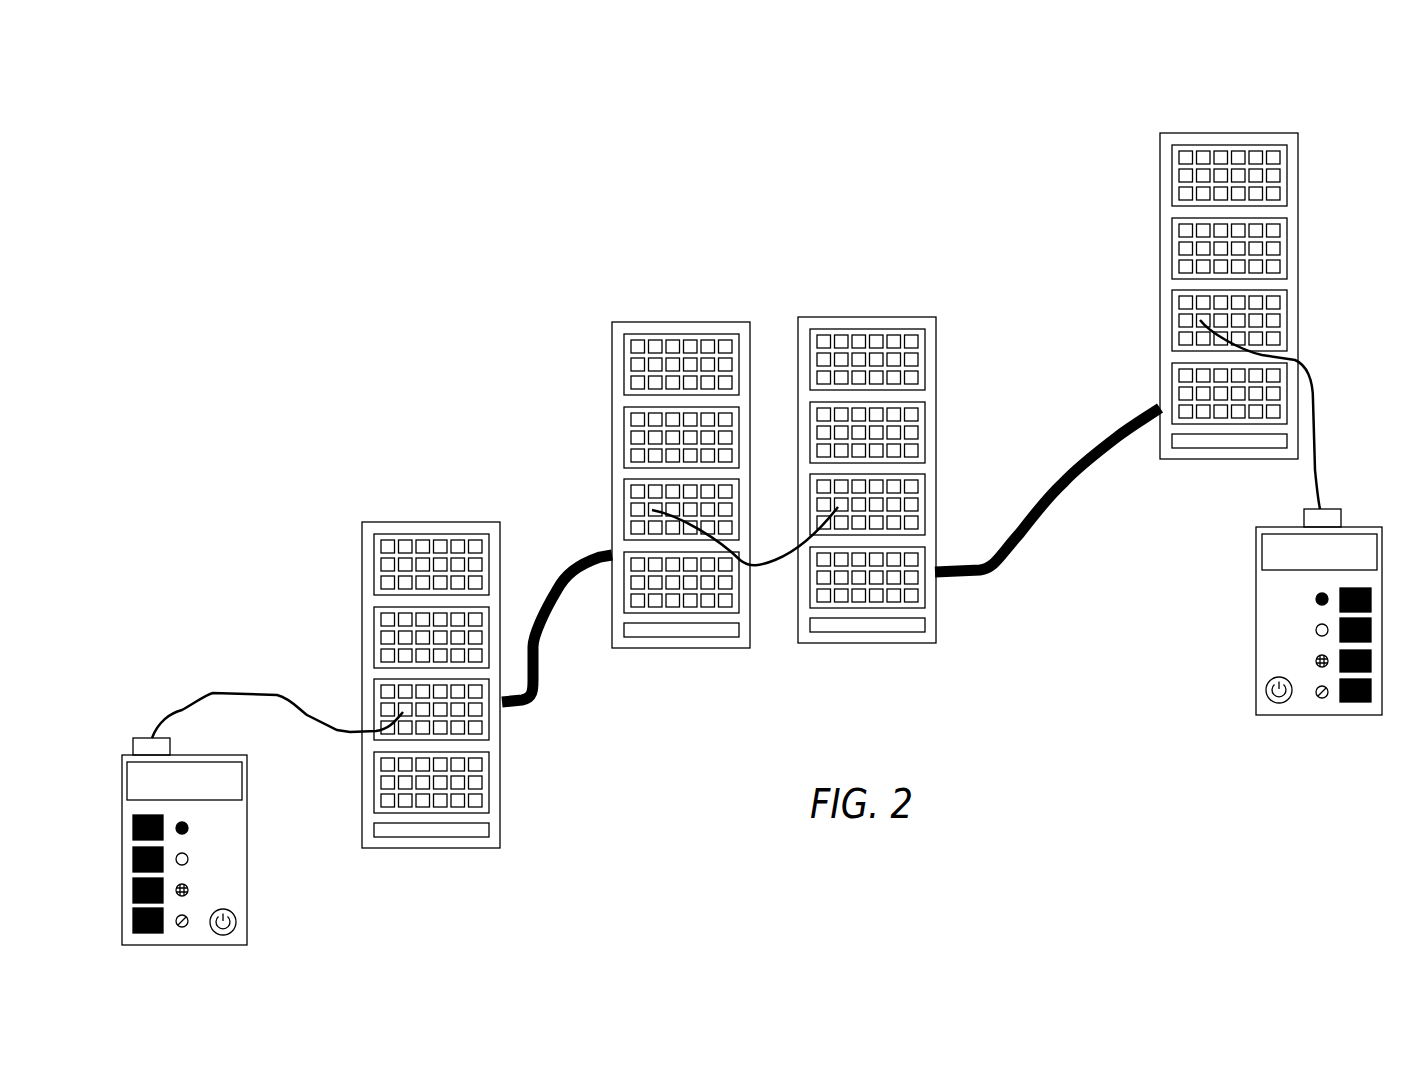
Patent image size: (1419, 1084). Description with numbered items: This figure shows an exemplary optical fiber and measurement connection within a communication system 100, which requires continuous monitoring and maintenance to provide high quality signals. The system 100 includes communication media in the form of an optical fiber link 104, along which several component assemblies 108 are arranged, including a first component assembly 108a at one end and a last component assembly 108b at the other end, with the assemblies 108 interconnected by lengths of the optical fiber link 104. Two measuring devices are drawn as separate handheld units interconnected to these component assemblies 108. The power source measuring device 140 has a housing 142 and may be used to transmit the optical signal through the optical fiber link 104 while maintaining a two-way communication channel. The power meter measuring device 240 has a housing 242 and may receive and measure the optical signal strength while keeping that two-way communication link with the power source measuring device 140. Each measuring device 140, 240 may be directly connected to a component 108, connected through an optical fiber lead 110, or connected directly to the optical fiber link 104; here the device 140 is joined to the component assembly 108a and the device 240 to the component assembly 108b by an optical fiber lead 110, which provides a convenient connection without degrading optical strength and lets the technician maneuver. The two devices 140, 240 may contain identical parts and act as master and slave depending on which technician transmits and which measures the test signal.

The communication system 100 is at (507, 231).
The optical fiber link 104 is at (568, 562).
The component assembly 108 is at (653, 322).
The component assembly 108a is at (430, 522).
The component assembly 108b is at (1202, 132).
The optical fiber lead 110 is at (240, 690).
The power source measuring device 140 is at (227, 841).
The housing 142 is at (230, 838).
The power meter measuring device 240 is at (1274, 613).
The housing 242 is at (1268, 600).